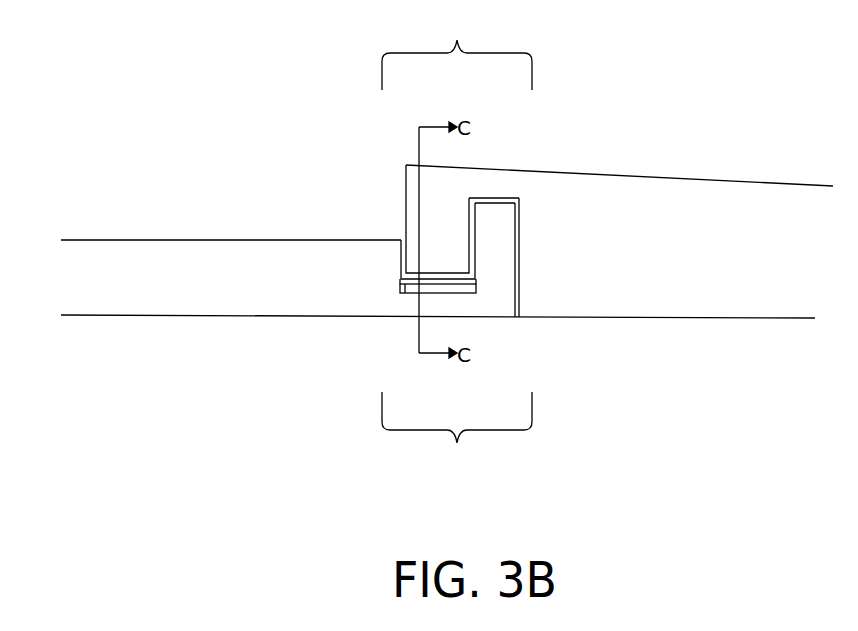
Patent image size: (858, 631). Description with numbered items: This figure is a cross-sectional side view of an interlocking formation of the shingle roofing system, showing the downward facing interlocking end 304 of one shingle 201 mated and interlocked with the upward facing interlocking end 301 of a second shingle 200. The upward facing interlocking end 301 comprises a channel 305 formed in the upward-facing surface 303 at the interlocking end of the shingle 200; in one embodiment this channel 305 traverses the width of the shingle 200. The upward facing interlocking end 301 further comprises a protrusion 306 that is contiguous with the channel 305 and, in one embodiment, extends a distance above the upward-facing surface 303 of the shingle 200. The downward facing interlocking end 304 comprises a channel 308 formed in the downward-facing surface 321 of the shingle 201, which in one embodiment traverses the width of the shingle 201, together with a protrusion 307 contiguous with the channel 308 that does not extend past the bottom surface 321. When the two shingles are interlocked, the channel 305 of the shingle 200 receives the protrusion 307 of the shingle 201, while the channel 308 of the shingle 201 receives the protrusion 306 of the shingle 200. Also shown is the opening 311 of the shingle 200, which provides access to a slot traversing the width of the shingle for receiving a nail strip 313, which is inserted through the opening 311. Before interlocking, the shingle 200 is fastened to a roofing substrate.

The shingle 200 is at (242, 290).
The shingle 201 is at (685, 255).
The upward facing interlocking end 301 is at (457, 432).
The upward-facing surface 303 is at (212, 230).
The downward facing interlocking end 304 is at (457, 49).
The channel 305 is at (398, 251).
The protrusion 306 is at (494, 257).
The protrusion 307 is at (446, 232).
The channel 308 is at (492, 197).
The opening 311 is at (412, 294).
The nail strip 313 is at (398, 288).
The downward-facing surface 321 is at (663, 330).